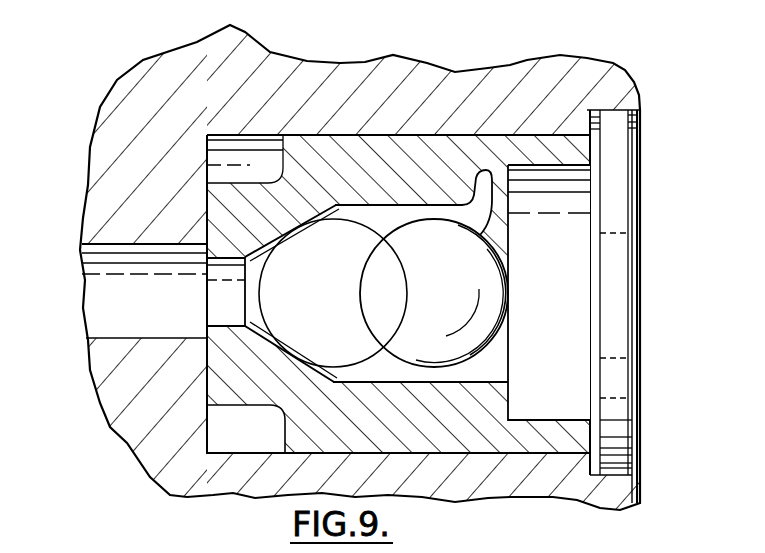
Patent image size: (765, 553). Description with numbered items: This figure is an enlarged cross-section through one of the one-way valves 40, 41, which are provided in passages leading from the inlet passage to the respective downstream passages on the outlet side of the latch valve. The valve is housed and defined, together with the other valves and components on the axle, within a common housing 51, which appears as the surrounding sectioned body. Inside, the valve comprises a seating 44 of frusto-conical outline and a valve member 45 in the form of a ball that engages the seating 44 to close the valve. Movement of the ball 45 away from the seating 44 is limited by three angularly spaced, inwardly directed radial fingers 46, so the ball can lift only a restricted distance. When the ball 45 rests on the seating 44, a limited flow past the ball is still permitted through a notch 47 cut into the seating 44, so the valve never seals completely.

The one-way valve 40 is at (398, 226).
The one-way valve 41 is at (406, 85).
The seating 44 is at (265, 340).
The valve member 45 is at (462, 284).
The radial fingers 46 is at (503, 232).
The notch 47 is at (273, 250).
The common housing 51 is at (205, 115).